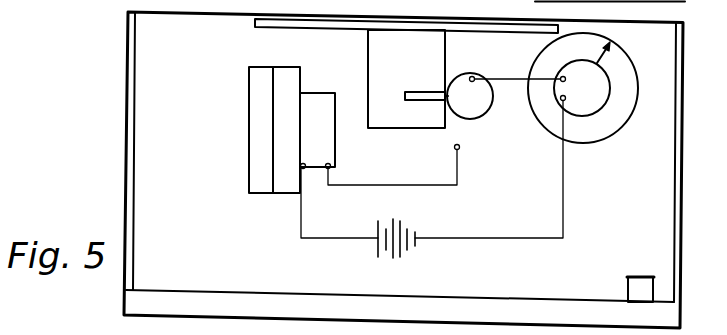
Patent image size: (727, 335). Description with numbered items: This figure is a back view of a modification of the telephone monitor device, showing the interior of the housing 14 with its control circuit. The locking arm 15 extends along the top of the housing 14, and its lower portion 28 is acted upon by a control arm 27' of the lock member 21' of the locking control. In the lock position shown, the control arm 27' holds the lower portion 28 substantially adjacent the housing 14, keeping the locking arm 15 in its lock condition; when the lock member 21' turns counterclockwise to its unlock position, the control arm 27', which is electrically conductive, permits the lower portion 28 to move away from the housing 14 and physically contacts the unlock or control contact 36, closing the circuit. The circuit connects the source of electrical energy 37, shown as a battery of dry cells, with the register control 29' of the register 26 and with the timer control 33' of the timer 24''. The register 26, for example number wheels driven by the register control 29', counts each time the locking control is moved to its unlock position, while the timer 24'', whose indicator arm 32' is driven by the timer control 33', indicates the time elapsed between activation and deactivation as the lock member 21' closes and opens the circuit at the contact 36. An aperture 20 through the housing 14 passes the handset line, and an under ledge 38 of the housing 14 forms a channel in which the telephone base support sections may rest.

The housing 14 is at (197, 186).
The locking arm 15 is at (254, 21).
The aperture 20 is at (637, 287).
The lock member 21' is at (481, 103).
The timer 24'' is at (593, 92).
The register 26 is at (285, 193).
The control arm 27' is at (424, 82).
The lower portion 28 is at (375, 57).
The register control 29' is at (337, 131).
The indicator arm 32' is at (586, 52).
The timer control 33' is at (582, 88).
The unlock contact 36 is at (460, 148).
The source of electrical energy 37 is at (398, 261).
The under ledge 38 is at (178, 302).